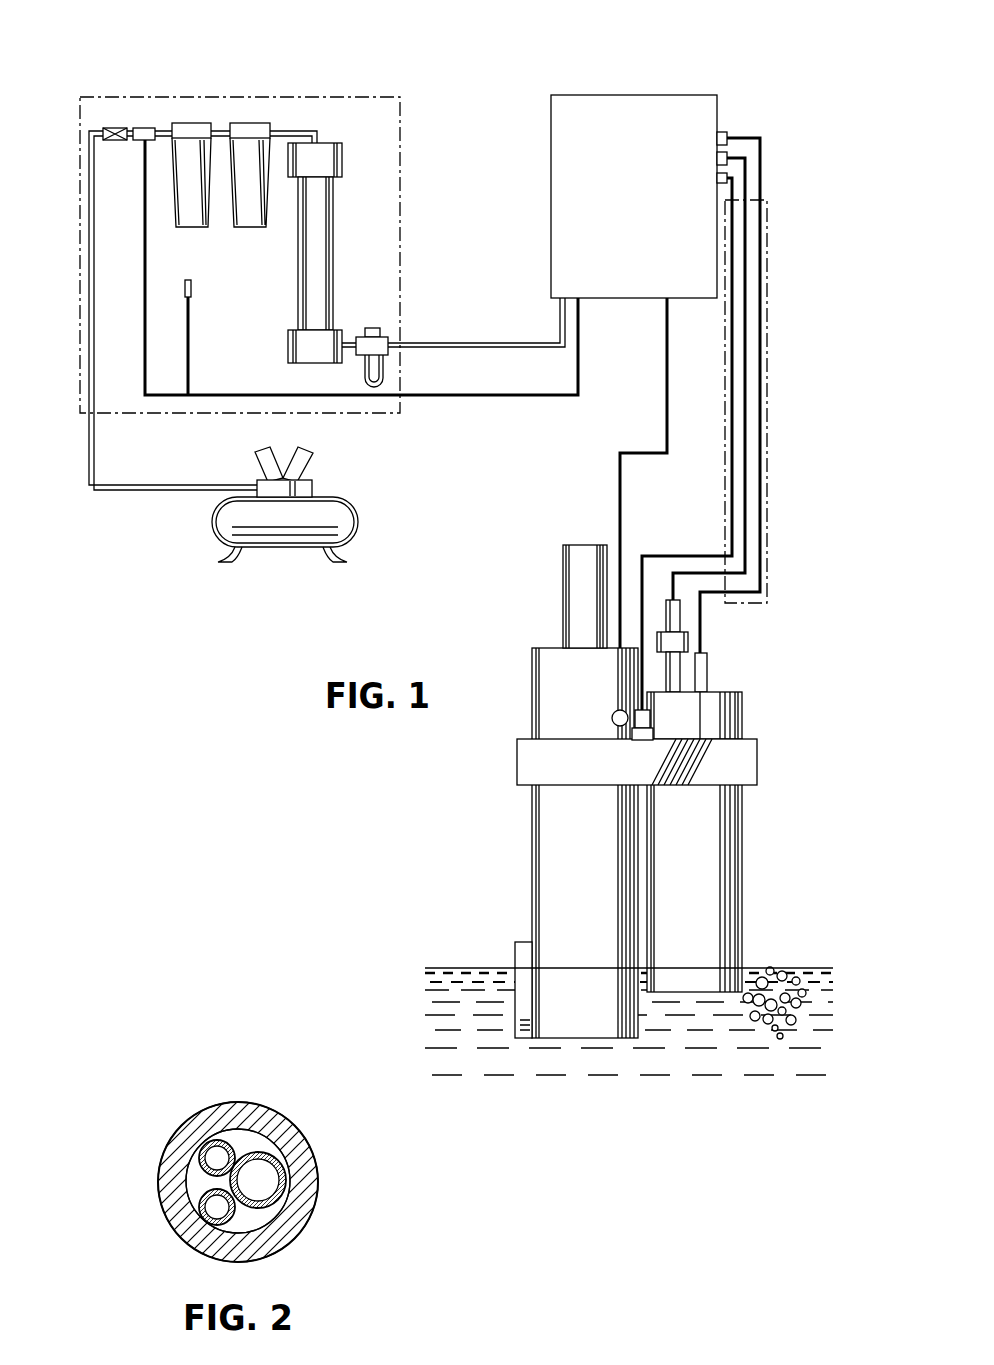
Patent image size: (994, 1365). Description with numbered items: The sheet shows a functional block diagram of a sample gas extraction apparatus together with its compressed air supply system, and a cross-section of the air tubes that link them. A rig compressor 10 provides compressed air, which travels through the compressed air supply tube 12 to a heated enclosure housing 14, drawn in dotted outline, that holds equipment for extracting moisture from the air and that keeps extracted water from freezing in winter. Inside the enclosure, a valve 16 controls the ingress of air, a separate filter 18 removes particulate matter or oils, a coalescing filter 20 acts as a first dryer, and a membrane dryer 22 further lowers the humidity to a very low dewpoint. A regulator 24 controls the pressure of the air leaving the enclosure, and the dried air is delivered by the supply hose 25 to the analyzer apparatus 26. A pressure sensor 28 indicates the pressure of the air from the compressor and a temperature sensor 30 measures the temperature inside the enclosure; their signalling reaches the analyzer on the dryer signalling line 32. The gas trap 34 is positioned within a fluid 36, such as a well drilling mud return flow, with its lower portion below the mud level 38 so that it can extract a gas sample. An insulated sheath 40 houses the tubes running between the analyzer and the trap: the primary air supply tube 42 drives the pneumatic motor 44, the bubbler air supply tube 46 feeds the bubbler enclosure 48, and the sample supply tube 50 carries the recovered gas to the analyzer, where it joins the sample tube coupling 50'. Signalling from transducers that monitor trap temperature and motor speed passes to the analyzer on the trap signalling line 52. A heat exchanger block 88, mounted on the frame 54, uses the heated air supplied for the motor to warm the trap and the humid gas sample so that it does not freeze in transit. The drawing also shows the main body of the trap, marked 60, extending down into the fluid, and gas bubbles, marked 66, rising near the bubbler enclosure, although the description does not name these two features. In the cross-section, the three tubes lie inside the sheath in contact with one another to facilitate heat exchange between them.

In FIG. 1, the rig compressor 10 is at (278, 540).
In FIG. 1, the compressed air supply hose or tube 12 is at (170, 490).
In FIG. 1, the heated enclosure housing 14 is at (388, 97).
In FIG. 1, the valve 16 is at (115, 128).
In FIG. 1, the separate filter 18 is at (190, 126).
In FIG. 1, the coalescing filter 20 is at (250, 126).
In FIG. 1, the membrane dryer 22 is at (342, 205).
In FIG. 1, the regulator 24 is at (373, 328).
In FIG. 1, the supply hose 25 is at (483, 343).
In FIG. 1, the analyzer apparatus 26 is at (697, 95).
In FIG. 1, the pressure sensor 28 is at (143, 128).
In FIG. 1, the temperature sensor 30 is at (192, 288).
In FIG. 1, the dryer signalling line 32 is at (495, 398).
In FIG. 1, the gas trap 34 is at (503, 570).
In FIG. 1, the fluid 36 is at (450, 1115).
In FIG. 1, the mud level 38 is at (810, 968).
In FIG. 1, the insulated sheath 40 is at (768, 470).
In FIG. 2, the insulated sheath 40 is at (292, 1130).
In FIG. 1, the primary air supply tube 42 is at (748, 350).
In FIG. 2, the primary air supply tube 42 is at (285, 1195).
In FIG. 1, the pneumatic motor 44 is at (572, 598).
In FIG. 1, the bubbler air supply tube 46 is at (735, 308).
In FIG. 2, the bubbler air supply tube 46 is at (205, 1205).
In FIG. 1, the bubbler enclosure 48 is at (738, 872).
In FIG. 1, the sample supply tube 50 is at (780, 415).
In FIG. 2, the sample supply tube 50 is at (157, 1128).
In FIG. 1, the sample tube coupling 50' is at (770, 115).
In FIG. 1, the trap signalling line 52 is at (665, 372).
In FIG. 1, the frame 54 is at (520, 760).
In FIG. 1, the probe housing 60 is at (548, 885).
In FIG. 1, the gas bubbles 66 is at (785, 1015).
In FIG. 1, the heat exchanger block 88 is at (742, 712).